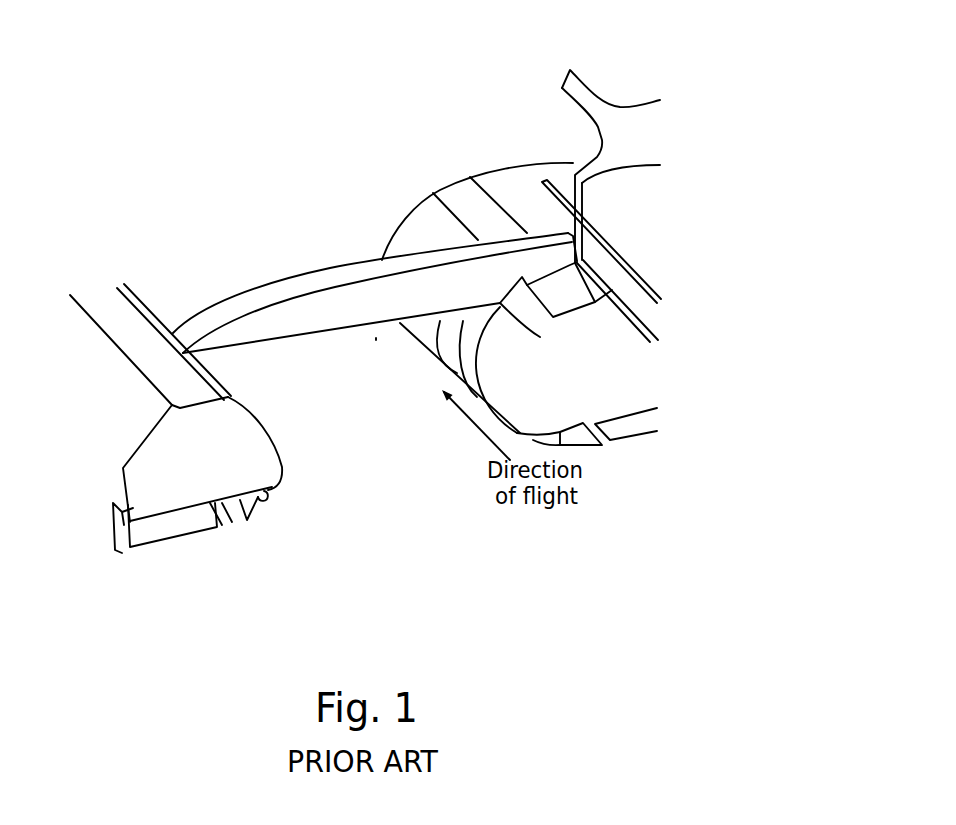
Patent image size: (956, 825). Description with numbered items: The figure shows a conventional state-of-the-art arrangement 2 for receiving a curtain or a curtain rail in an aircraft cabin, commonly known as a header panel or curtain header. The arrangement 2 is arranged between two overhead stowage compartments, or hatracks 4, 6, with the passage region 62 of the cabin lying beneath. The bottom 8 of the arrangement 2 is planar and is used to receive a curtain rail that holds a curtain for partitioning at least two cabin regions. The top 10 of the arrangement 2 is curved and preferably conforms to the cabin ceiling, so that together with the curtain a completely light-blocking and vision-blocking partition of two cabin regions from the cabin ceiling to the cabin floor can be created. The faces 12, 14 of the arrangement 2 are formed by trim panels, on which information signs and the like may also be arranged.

The arrangement for receiving a curtain rail 2 is at (285, 318).
The overhead stowage compartment 4 is at (595, 397).
The overhead stowage compartment 6 is at (178, 449).
The passage region 62 is at (305, 457).
The bottom of the arrangement 8 is at (376, 335).
The top of the arrangement 10 is at (513, 243).
The first face of the arrangement 12 is at (491, 297).
The second face of the arrangement 14 is at (375, 248).